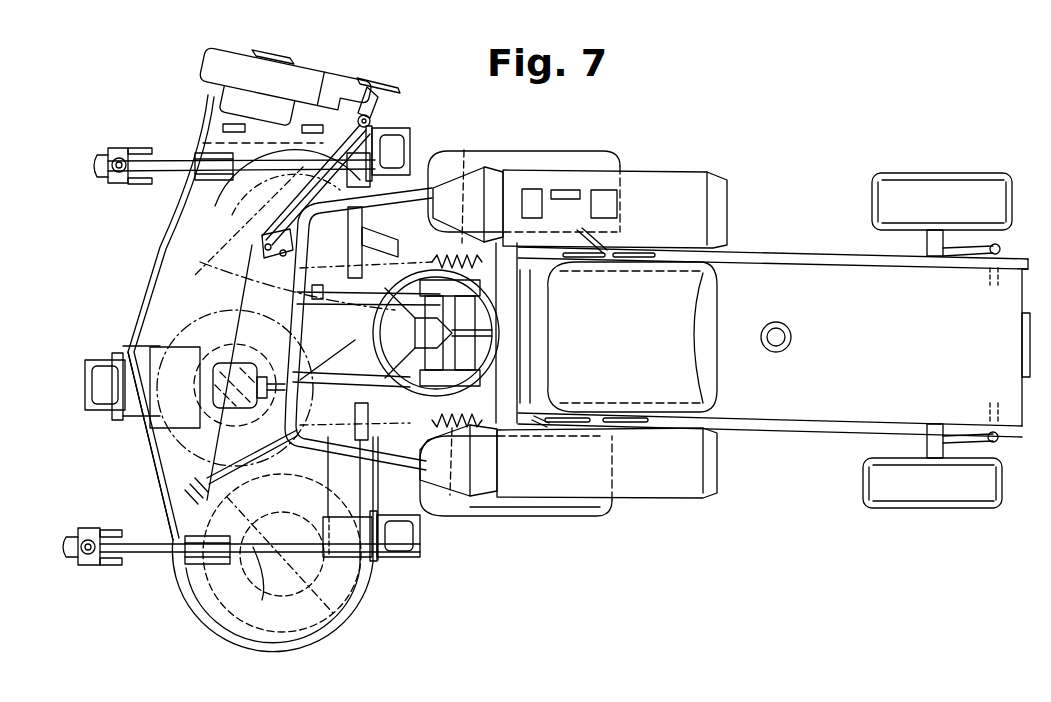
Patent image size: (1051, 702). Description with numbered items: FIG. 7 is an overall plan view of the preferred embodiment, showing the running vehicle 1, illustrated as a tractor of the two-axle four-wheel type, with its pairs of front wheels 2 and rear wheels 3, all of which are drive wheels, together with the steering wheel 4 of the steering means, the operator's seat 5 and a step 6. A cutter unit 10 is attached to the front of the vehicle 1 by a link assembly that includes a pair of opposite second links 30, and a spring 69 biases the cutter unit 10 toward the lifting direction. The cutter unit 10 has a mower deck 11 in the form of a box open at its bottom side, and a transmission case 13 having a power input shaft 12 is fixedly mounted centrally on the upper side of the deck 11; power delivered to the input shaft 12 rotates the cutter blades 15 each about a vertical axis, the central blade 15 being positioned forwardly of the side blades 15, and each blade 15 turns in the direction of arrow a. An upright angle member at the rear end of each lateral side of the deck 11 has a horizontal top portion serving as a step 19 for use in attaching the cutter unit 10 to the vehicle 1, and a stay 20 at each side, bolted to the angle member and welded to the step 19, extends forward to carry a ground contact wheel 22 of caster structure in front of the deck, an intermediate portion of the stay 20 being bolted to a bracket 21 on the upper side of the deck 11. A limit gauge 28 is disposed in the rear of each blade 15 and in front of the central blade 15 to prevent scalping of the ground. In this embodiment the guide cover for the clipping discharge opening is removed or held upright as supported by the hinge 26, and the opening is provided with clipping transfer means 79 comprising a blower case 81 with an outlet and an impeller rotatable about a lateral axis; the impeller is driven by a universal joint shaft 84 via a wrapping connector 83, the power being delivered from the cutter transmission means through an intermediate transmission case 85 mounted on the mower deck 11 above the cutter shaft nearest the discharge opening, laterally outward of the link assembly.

The running vehicle 1 is at (768, 250).
The front wheels 2 is at (548, 153).
The rear wheels 3 is at (960, 198).
The steering wheel 4 is at (505, 338).
The operator's seat 5 is at (688, 330).
The step 6 is at (380, 450).
The cutter unit 10 is at (138, 300).
The mower deck 11 is at (143, 455).
The power input shaft 12 is at (278, 367).
The transmission case 13 is at (213, 396).
The cutter blades 15 is at (320, 600).
The step 19 is at (340, 533).
The stay 20 is at (265, 585).
The bracket 21 is at (200, 178).
The ground contact wheel 22 is at (176, 160).
The hinge 26 is at (228, 122).
The limit gauge 28 is at (411, 150).
The second links 30 is at (170, 320).
The spring 69 is at (470, 153).
The clipping transfer means 79 is at (206, 53).
The blower case 81 is at (237, 70).
The wrapping connector 83 is at (351, 82).
The universal joint shaft 84 is at (371, 121).
The intermediate transmission case 85 is at (240, 212).
The direction of blade rotation a is at (178, 320).